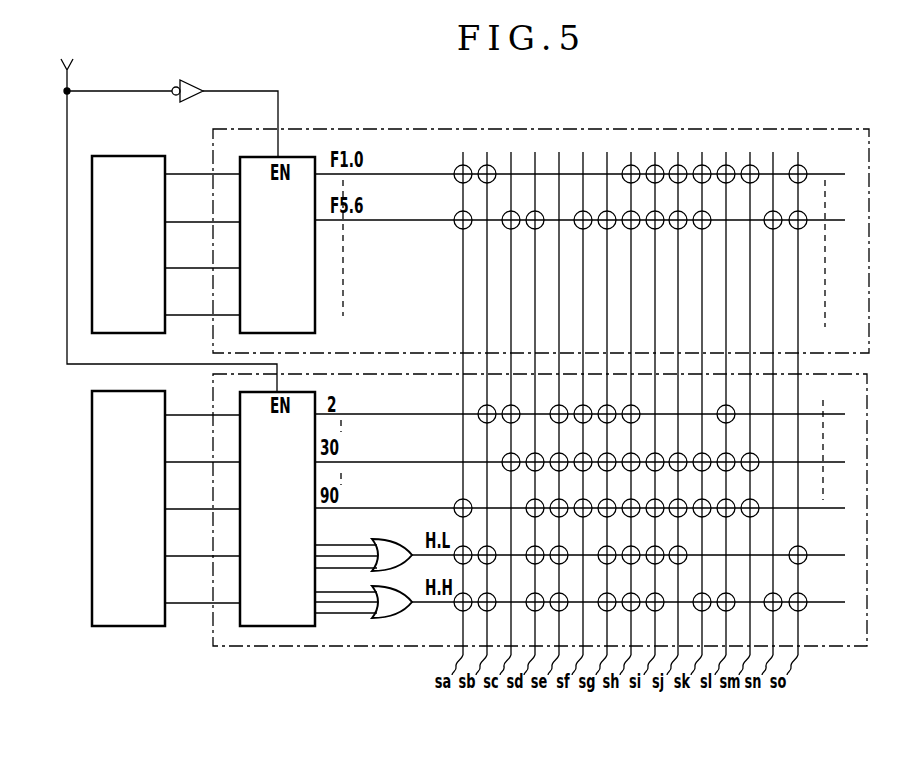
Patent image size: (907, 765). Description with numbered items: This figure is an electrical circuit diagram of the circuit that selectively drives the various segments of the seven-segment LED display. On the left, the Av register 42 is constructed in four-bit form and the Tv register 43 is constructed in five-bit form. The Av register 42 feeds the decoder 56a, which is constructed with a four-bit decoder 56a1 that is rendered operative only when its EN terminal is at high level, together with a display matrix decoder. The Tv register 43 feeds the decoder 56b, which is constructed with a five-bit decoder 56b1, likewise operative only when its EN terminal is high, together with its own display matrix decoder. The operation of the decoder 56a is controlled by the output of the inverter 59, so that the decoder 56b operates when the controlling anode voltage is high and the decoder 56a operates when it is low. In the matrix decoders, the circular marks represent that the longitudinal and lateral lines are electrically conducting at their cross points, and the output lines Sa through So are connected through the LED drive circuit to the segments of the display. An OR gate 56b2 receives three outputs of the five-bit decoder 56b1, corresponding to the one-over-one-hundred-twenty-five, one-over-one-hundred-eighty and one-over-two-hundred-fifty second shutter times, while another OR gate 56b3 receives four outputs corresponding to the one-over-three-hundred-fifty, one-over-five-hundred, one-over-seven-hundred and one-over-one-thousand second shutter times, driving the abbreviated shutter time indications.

The Av register 42 is at (140, 156).
The Tv register 43 is at (112, 628).
The inverter 59 is at (198, 87).
The decoder 56a is at (810, 129).
The 4-bit decoder 56a1 is at (297, 157).
The decoder 56b is at (822, 646).
The 5-bit decoder 56b1 is at (270, 627).
The OR gate 56b2 is at (390, 537).
The OR gate 56b3 is at (383, 620).